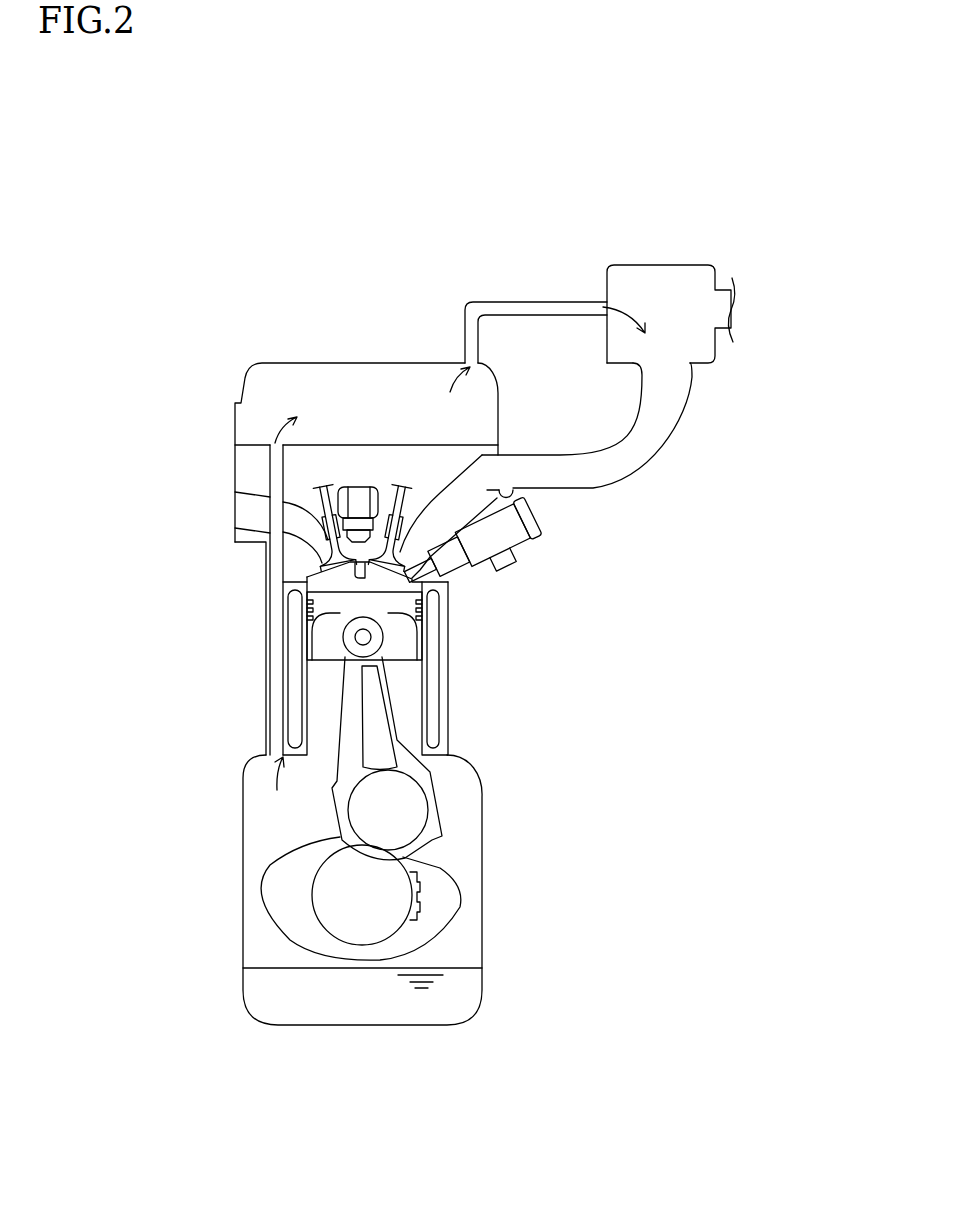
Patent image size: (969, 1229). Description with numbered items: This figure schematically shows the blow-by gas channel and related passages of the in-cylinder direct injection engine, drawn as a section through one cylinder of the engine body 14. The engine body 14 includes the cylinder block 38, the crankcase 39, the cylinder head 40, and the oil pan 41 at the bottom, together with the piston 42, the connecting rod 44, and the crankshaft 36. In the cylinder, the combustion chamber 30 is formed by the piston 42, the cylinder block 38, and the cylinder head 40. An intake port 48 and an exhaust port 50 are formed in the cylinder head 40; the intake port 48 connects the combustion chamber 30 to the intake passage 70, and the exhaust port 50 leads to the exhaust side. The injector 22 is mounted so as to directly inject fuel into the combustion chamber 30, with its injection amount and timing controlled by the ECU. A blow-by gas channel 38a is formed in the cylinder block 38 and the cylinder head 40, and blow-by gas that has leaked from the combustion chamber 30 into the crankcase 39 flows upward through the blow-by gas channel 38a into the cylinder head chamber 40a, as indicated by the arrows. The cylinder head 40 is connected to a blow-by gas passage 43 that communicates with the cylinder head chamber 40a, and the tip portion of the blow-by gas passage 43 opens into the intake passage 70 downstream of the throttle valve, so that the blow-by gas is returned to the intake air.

The engine body 14 is at (490, 718).
The injector 22 is at (500, 540).
The combustion chamber 30 is at (383, 583).
The crankshaft 36 is at (327, 903).
The cylinder block 38 is at (265, 623).
The blow-by gas channel 38a is at (275, 705).
The crankcase 39 is at (243, 847).
The cylinder head 40 is at (235, 462).
The cylinder head chamber 40a is at (375, 382).
The oil pan 41 is at (357, 1025).
The piston 42 is at (420, 642).
The blow-by gas passage 43 is at (528, 300).
The connecting rod 44 is at (438, 810).
The intake port 48 is at (472, 482).
The exhaust port 50 is at (247, 510).
The intake passage 70 is at (623, 462).